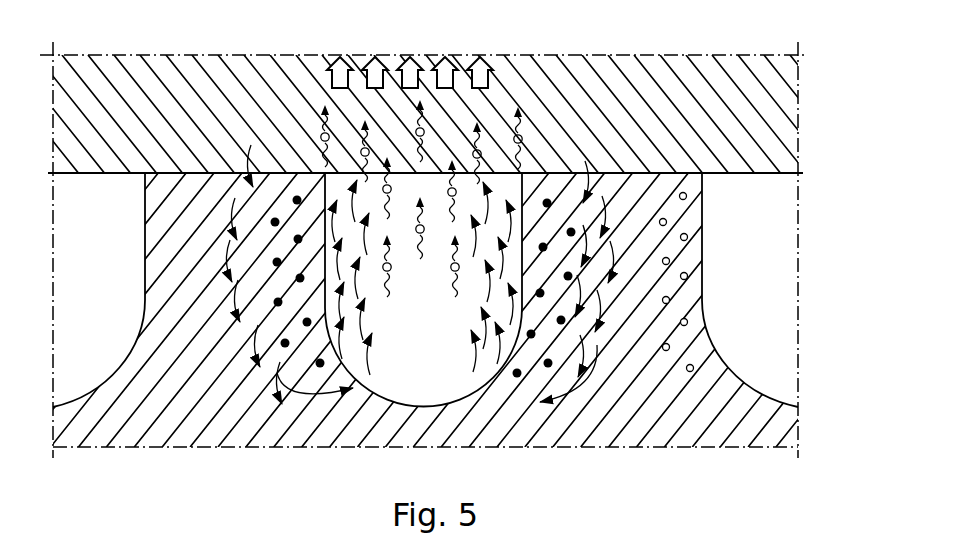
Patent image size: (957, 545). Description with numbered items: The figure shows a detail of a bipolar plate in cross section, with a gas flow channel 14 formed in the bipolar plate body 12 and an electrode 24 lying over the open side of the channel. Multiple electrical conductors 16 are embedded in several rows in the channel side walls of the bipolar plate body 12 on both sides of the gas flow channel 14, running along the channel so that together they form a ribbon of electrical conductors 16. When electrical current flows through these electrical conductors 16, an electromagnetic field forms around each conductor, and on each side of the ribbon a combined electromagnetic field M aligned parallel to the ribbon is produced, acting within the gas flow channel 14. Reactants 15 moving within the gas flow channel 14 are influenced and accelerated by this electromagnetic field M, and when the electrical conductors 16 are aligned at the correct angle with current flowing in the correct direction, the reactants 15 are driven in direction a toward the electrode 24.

The bipolar plate body 12 is at (708, 310).
The gas flow channel 14 is at (413, 385).
The reactants 15 is at (323, 128).
The electrical conductors 16 is at (262, 368).
The electrode 24 is at (767, 135).
The electromagnetic field M is at (382, 353).
The direction of movement a is at (420, 73).